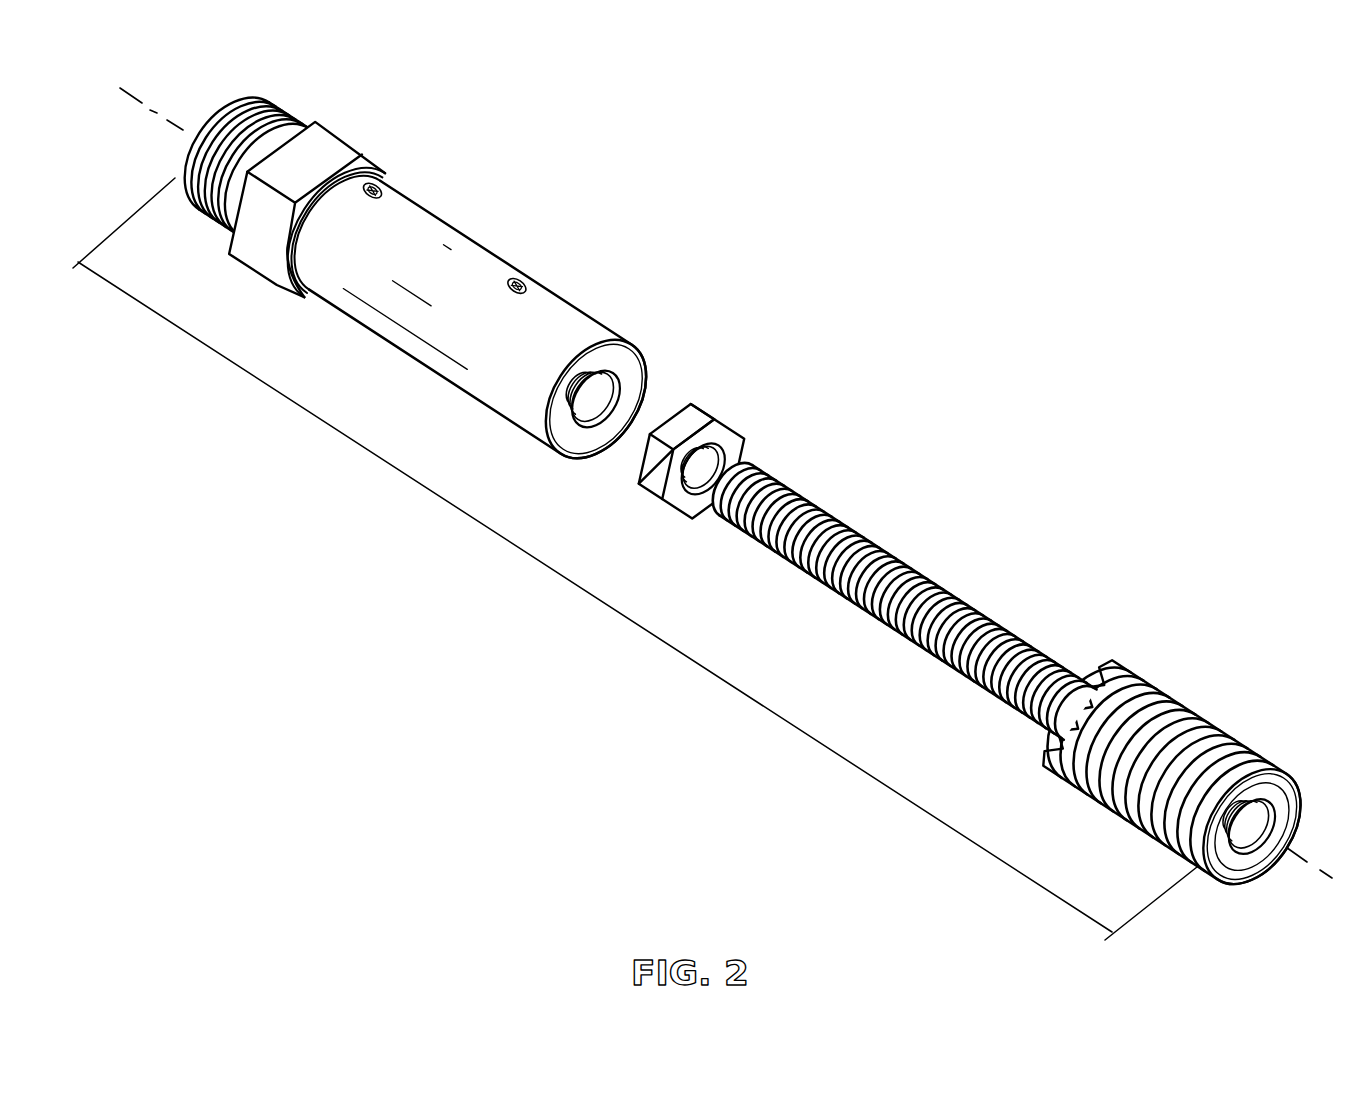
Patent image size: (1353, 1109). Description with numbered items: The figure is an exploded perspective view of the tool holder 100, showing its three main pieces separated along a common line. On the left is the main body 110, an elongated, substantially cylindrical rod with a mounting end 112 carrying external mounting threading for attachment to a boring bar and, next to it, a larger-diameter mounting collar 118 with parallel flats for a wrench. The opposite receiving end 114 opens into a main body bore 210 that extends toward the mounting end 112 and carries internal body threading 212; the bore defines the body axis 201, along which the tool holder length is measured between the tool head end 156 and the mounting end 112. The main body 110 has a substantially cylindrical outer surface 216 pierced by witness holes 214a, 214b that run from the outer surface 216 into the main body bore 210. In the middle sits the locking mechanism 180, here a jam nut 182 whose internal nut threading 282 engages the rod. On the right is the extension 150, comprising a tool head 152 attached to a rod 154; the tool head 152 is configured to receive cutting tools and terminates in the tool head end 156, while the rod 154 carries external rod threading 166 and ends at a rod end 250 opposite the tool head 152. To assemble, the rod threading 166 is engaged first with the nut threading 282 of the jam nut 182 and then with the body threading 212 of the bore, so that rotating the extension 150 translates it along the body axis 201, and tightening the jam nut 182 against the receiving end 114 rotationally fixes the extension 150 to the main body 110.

The tool holder 100 is at (702, 514).
The main body 110 is at (524, 320).
The mounting end 112 is at (226, 100).
The receiving end 114 is at (650, 375).
The mounting collar 118 is at (327, 145).
The extension 150 is at (899, 576).
The tool head 152 is at (1110, 722).
The rod 154 is at (898, 575).
The tool head end 156 is at (1233, 862).
The rod threading 166 is at (900, 555).
The locking mechanism 180 is at (715, 486).
The jam nut 182 is at (657, 477).
The body axis 201 is at (1292, 853).
The main body bore 210 is at (600, 440).
The body threading 212 is at (636, 378).
The witness hole 214a is at (385, 190).
The witness hole 214b is at (530, 280).
The outer surface 216 is at (363, 313).
The rod end 250 is at (748, 462).
The nut threading 282 is at (700, 478).